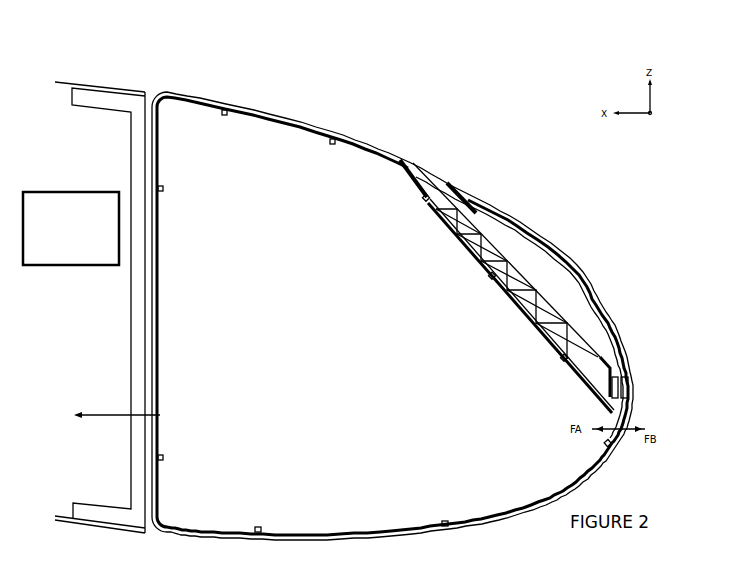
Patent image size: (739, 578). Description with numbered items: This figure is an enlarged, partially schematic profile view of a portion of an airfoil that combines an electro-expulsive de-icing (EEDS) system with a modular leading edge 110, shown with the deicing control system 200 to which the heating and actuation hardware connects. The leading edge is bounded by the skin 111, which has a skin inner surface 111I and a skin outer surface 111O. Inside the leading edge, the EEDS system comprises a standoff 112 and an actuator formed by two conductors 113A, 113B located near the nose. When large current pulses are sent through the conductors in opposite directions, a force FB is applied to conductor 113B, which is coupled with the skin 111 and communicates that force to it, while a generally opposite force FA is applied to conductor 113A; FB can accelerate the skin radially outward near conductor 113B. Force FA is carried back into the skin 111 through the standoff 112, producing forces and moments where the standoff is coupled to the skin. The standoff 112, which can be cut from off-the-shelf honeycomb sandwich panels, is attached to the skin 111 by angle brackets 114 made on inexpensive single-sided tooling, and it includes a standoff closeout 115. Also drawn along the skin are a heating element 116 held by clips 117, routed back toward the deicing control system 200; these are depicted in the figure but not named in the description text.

The deicing control system 200 is at (136, 84).
The modular leading edge 110 is at (408, 316).
The skin 111 is at (399, 316).
The skin outer surface 111O is at (580, 268).
The skin inner surface 111I is at (533, 247).
The standoff 112 is at (519, 292).
The conductor 113A is at (614, 376).
The conductor 113B is at (625, 376).
The angle brackets 114 is at (406, 168).
The standoff closeout 115 is at (591, 386).
The heating element 116 is at (277, 123).
The clip 117 is at (257, 525).